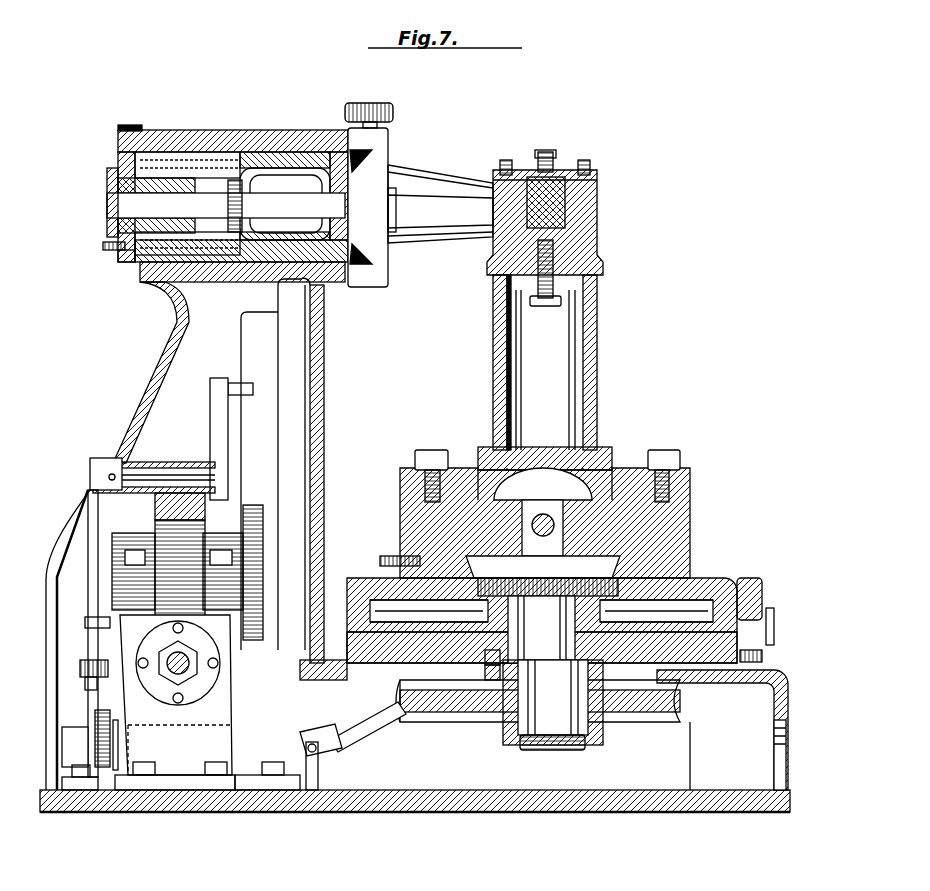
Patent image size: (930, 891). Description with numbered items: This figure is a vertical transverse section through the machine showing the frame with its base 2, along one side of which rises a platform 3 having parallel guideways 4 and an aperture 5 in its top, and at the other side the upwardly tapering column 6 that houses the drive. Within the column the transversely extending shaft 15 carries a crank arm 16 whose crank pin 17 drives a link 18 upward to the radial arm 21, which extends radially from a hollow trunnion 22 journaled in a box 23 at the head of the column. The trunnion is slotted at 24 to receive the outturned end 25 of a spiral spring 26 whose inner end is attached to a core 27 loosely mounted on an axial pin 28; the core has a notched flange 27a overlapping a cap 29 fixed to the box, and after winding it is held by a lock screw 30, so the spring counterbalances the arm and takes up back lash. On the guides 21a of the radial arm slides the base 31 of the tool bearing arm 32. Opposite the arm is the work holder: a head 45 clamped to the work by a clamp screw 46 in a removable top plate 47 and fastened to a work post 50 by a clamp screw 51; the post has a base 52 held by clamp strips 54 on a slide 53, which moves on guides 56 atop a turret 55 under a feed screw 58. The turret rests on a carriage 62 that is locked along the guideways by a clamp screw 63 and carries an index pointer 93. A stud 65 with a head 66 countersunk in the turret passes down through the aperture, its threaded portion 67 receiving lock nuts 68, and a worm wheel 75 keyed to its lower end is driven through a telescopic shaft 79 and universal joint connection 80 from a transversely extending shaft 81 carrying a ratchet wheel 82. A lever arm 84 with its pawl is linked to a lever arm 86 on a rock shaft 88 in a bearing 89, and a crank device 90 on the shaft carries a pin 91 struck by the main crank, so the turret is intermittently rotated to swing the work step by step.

The base 2 is at (515, 812).
The platform 3 is at (690, 800).
The guideways 4 is at (660, 632).
The aperture 5 is at (612, 626).
The column 6 is at (337, 384).
The transversely extending shaft 15 is at (200, 676).
The crank arm 16 is at (260, 640).
The crank pin 17 is at (245, 315).
The link 18 is at (305, 458).
The radial arm 21 is at (348, 140).
The guides 21a is at (366, 160).
The hollow trunnion 22 is at (300, 130).
The box 23 is at (236, 122).
The slot 24 is at (152, 150).
The outturned end 25 is at (160, 152).
The spiral spring 26 is at (242, 186).
The core 27 is at (107, 196).
The notched flange 27a is at (103, 247).
The axial pin 28 is at (305, 218).
The cap 29 is at (150, 285).
The lock screw 30 is at (118, 258).
The base of tool bearing arm 31 is at (396, 182).
The tool bearing arm 32 is at (455, 180).
The head 45 is at (597, 236).
The clamp screw 46 is at (553, 158).
The removable top plate 47 is at (590, 168).
The work post 50 is at (597, 334).
The clamp screw 51 is at (545, 306).
The base 52 is at (630, 470).
The slide 53 is at (688, 502).
The clamp strips 54 is at (680, 472).
The turret 55 is at (712, 580).
The guides 56 is at (680, 552).
The feed screw 58 is at (540, 536).
The carriage 62 is at (742, 598).
The clamp screw 63 is at (762, 646).
The stud 65 is at (541, 629).
The head 66 is at (550, 586).
The threaded portion 67 is at (486, 660).
The lock nuts 68 is at (490, 674).
The worm wheel 75 is at (500, 716).
The telescopic shaft 79 is at (366, 736).
The universal joint connection 80 is at (340, 756).
The transversely extending shaft 81 is at (320, 762).
The ratchet wheel 82 is at (117, 752).
The lever arm 84 is at (108, 675).
The lever arm 86 is at (90, 510).
The rock shaft 88 is at (178, 470).
The bearing 89 is at (140, 462).
The crank device 90 is at (212, 408).
The pin 91 is at (236, 384).
The pointer 93 is at (762, 658).